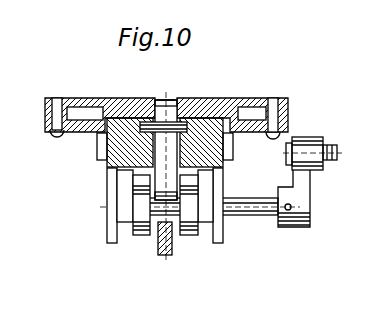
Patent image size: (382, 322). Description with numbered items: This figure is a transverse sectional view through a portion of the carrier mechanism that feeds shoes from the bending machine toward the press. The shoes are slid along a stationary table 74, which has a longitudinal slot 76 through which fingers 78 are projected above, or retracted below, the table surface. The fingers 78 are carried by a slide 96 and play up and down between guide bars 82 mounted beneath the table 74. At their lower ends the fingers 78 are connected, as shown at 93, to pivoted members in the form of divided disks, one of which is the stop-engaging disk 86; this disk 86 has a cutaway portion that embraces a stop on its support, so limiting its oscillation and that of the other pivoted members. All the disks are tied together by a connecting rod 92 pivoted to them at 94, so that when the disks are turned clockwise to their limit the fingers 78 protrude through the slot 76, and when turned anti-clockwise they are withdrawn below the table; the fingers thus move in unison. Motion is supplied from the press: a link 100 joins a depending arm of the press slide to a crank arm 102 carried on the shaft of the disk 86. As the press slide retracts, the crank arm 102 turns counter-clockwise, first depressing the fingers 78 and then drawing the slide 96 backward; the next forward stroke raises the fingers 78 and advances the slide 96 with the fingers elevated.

The stationary table 74 is at (207, 100).
The longitudinal slot 76 is at (177, 100).
The fingers 78 is at (165, 100).
The guide bars 82 is at (113, 98).
The pivoted member 86 is at (128, 206).
The connecting rod 92 is at (163, 256).
The finger connection 93 is at (181, 210).
The pivot 94 is at (153, 228).
The slide 96 is at (95, 98).
The link 100 is at (318, 138).
The crank arm 102 is at (303, 184).